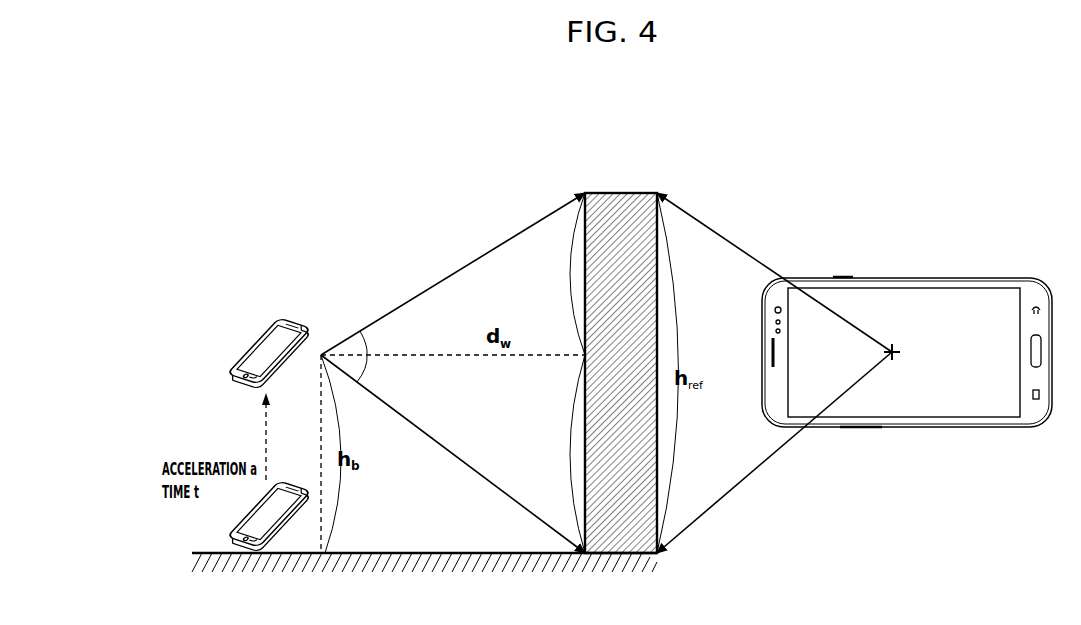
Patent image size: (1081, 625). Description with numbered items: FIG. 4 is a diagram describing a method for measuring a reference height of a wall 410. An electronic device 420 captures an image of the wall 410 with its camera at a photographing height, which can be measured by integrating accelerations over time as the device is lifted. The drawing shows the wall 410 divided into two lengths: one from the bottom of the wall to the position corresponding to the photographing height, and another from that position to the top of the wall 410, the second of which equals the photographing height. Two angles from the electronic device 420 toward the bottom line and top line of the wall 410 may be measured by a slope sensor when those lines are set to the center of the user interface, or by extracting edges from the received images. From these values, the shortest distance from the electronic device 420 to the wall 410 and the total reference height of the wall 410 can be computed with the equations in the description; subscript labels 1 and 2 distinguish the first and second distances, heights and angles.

The wall 410 is at (622, 193).
The electronic device 420 is at (255, 345).
The first distance d1, first height h1 and first angle θ 1 is at (454, 454).
The second distance d2, second height h2 and second angle θ 2 is at (453, 274).